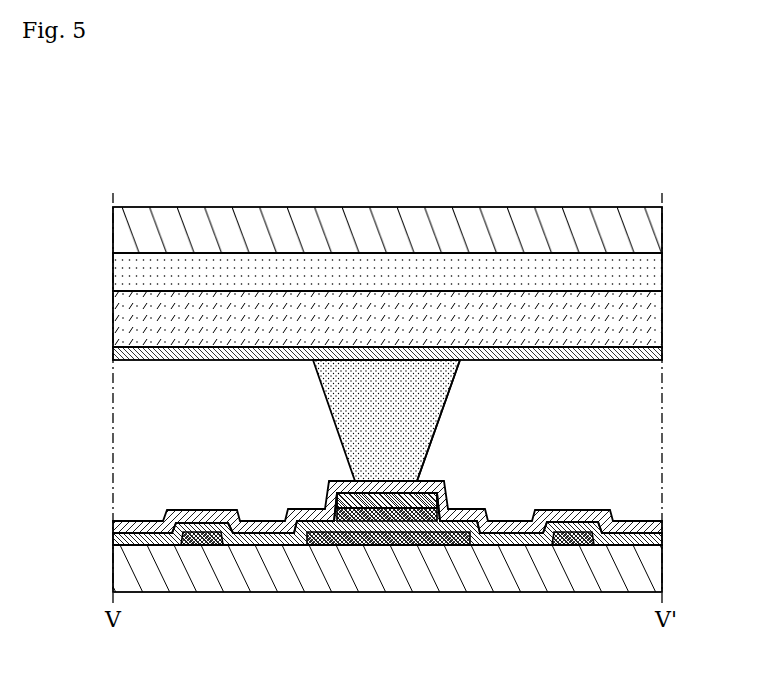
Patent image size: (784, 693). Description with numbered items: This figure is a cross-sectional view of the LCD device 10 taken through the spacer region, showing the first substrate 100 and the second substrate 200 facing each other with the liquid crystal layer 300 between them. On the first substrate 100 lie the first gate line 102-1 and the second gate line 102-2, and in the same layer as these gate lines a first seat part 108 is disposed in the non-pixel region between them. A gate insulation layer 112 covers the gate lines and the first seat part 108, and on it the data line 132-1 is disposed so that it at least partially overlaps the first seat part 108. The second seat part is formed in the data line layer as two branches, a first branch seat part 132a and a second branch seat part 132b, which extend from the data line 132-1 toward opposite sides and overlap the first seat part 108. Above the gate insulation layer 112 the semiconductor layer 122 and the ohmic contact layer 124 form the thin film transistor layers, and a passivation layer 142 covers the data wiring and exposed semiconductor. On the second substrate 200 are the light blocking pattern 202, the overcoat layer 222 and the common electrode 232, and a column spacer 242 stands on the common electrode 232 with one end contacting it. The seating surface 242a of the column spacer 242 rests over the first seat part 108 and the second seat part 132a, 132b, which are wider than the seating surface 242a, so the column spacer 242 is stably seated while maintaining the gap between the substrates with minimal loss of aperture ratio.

The LCD device 10 is at (419, 163).
The first substrate 100 is at (118, 570).
The first gate line 102-1 is at (203, 545).
The second gate line 102-2 is at (573, 545).
The first seat part 108 is at (450, 540).
The gate insulation layer 112 is at (113, 537).
The semiconductor layer 122 is at (392, 496).
The ohmic contact layer 124 is at (365, 509).
The 2-1st seat part 132a is at (348, 496).
The 2-2nd seat part 132b is at (422, 496).
The data line 132-1 is at (398, 509).
The passivation layer 142 is at (118, 525).
The second substrate 200 is at (113, 232).
The light blocking pattern 202 is at (115, 275).
The overcoat layer 222 is at (118, 327).
The common electrode 232 is at (118, 355).
The column spacer 242 is at (345, 393).
The seating surface 242a is at (390, 480).
The liquid crystal layer 300 is at (648, 417).